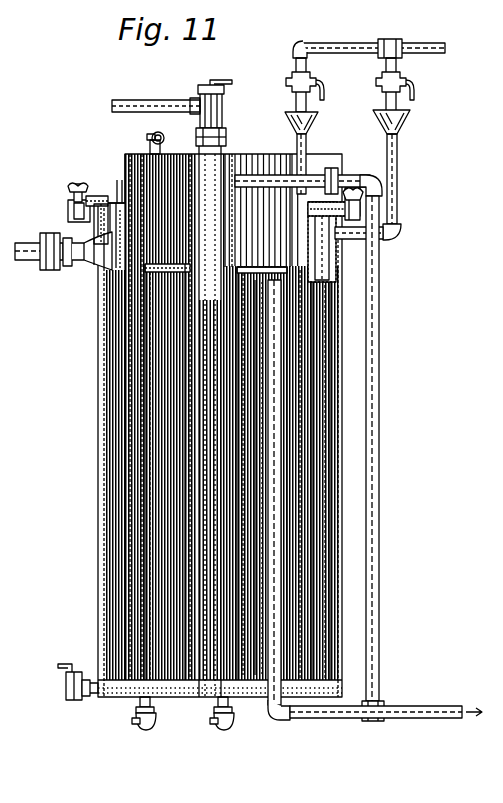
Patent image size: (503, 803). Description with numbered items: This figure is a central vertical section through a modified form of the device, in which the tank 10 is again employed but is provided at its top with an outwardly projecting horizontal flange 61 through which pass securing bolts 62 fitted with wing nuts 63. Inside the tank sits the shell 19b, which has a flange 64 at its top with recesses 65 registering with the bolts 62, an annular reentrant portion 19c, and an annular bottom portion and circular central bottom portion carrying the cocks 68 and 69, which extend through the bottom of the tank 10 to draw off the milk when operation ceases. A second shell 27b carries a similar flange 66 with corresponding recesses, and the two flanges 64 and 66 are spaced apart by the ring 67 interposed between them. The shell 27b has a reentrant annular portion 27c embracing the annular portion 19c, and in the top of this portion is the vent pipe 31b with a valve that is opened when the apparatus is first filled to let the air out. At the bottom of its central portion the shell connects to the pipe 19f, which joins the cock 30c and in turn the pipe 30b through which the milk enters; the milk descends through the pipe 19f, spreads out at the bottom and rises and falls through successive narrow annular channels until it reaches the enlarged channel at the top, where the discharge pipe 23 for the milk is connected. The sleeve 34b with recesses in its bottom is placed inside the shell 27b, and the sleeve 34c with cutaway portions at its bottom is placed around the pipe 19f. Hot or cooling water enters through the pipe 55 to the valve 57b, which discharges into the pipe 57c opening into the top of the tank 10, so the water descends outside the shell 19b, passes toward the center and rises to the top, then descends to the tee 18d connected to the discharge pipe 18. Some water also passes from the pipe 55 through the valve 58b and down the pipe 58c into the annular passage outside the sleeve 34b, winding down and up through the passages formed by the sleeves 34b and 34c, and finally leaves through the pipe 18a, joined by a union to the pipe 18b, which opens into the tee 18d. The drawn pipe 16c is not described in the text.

The tank 10 is at (102, 375).
The discharge pipe 16c is at (268, 430).
The discharge pipe 18 is at (422, 706).
The pipe 18a is at (262, 180).
The pipe 18b is at (378, 326).
The tee 18d is at (386, 721).
The shell 19b is at (118, 403).
The annular reentrant portion 19c is at (262, 272).
The pipe 19f is at (213, 238).
The discharge pipe 23 is at (32, 258).
The shell 27b is at (118, 343).
The reentrant annular portion 27c is at (150, 264).
The pipe 30b is at (146, 106).
The cock 30c is at (222, 110).
The vent pipe 31b is at (160, 147).
The sleeve 34b is at (140, 152).
The sleeve 34c is at (240, 165).
The pipe 55 is at (350, 38).
The valve 57b is at (403, 78).
The pipe 57c is at (398, 176).
The valve 58b is at (309, 76).
The pipe 58c is at (308, 143).
The horizontal flange 61 is at (68, 214).
The securing bolts 62 is at (68, 196).
The wing nuts 63 is at (80, 196).
The flange 64 is at (68, 208).
The recesses 65 is at (87, 247).
The flange 66 is at (98, 204).
The ring 67 is at (120, 180).
The cock 68 is at (150, 720).
The cock 69 is at (226, 720).